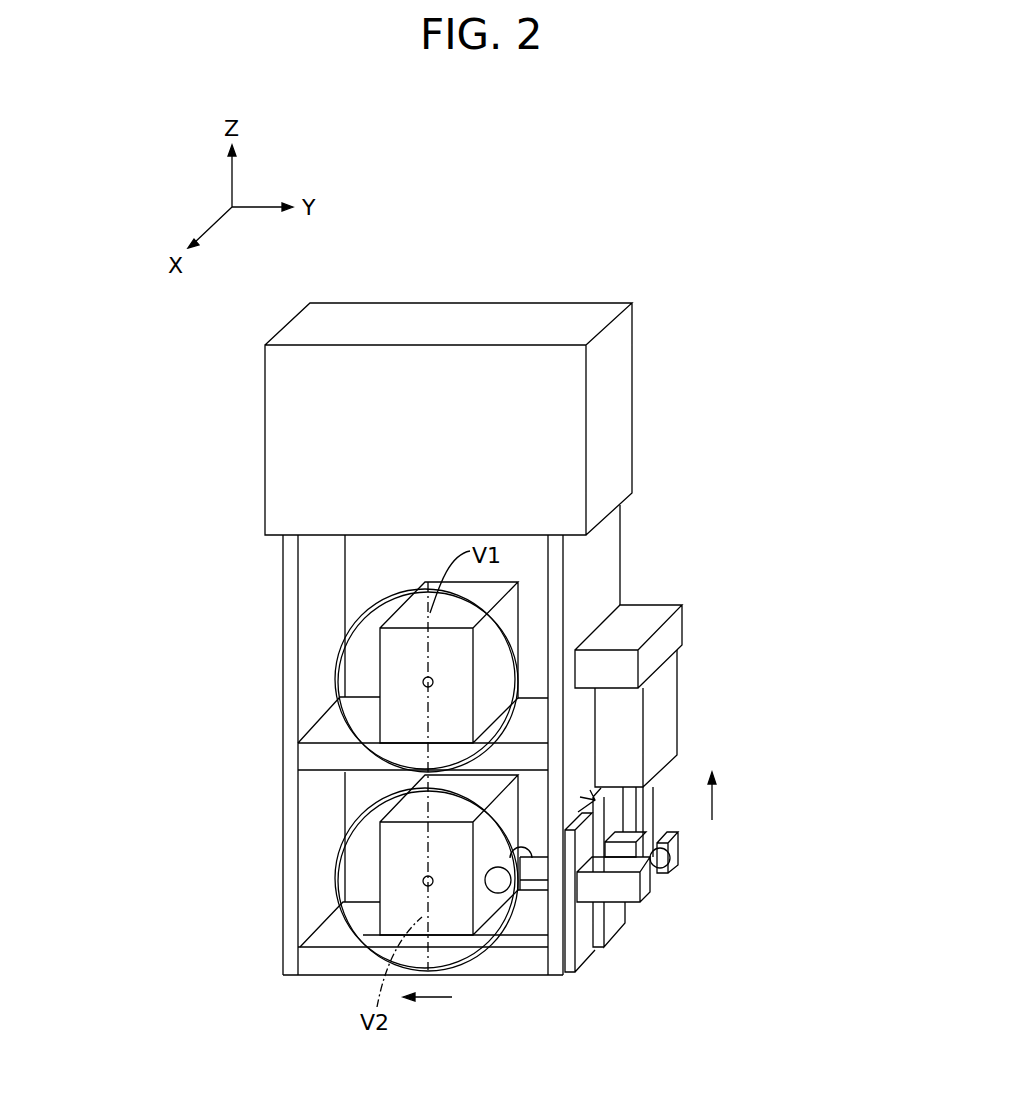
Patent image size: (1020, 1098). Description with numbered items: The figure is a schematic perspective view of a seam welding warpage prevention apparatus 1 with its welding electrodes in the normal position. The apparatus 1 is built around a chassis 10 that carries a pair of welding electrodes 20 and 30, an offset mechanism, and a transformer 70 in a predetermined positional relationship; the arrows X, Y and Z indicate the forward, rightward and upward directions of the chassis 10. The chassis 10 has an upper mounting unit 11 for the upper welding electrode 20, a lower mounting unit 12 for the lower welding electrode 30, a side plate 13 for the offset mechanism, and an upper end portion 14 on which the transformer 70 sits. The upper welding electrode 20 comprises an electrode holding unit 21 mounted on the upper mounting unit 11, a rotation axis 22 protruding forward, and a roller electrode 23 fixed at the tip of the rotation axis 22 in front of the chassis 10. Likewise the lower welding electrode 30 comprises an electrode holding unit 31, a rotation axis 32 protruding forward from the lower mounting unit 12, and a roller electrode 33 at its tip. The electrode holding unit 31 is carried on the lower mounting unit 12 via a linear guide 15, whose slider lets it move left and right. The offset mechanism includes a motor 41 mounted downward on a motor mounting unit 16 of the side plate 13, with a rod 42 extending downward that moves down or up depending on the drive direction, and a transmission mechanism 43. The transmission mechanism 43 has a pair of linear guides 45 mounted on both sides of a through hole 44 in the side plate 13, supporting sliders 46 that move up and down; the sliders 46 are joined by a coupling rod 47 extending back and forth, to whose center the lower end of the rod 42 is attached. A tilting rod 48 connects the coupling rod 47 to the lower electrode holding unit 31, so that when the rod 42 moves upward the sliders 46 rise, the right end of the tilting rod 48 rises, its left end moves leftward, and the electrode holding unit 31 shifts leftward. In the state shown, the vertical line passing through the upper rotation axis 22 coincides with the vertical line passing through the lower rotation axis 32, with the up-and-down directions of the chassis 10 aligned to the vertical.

The seam welding warpage prevention apparatus 1 is at (540, 216).
The chassis 10 is at (456, 751).
The upper mounting unit 11 is at (323, 730).
The lower mounting unit 12 is at (323, 937).
The side plate 13 is at (613, 557).
The upper end portion 14 is at (288, 552).
The linear guide 15 is at (520, 942).
The motor mounting unit 16 is at (678, 625).
The upper welding electrode 20 is at (338, 677).
The electrode holding unit 21 is at (420, 582).
The rotation axis 22 is at (425, 680).
The roller electrode 23 is at (342, 687).
The lower welding electrode 30 is at (353, 873).
The electrode holding unit 31 is at (415, 784).
The rotation axis 32 is at (425, 878).
The roller electrode 33 is at (342, 885).
The motor 41 is at (668, 685).
The rod 42 is at (648, 796).
The transmission mechanism 43 is at (798, 873).
The through hole 44 is at (668, 836).
The linear guide 45 is at (612, 918).
The slider 46 is at (676, 857).
The coupling rod 47 is at (656, 863).
The tilting rod 48 is at (533, 870).
The transformer 70 is at (622, 403).